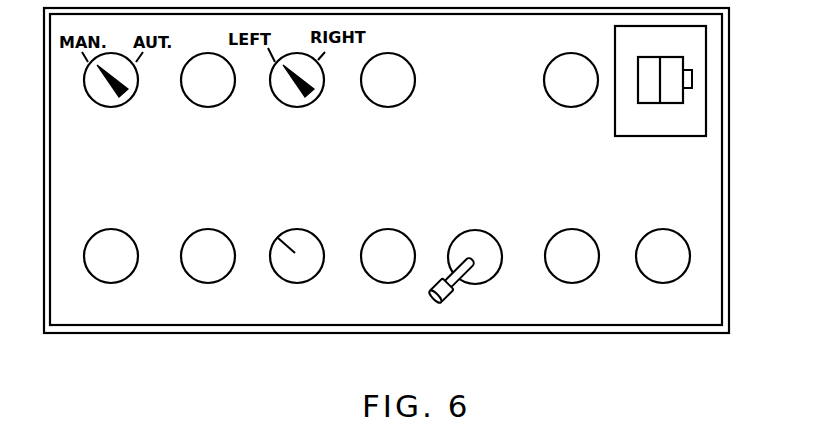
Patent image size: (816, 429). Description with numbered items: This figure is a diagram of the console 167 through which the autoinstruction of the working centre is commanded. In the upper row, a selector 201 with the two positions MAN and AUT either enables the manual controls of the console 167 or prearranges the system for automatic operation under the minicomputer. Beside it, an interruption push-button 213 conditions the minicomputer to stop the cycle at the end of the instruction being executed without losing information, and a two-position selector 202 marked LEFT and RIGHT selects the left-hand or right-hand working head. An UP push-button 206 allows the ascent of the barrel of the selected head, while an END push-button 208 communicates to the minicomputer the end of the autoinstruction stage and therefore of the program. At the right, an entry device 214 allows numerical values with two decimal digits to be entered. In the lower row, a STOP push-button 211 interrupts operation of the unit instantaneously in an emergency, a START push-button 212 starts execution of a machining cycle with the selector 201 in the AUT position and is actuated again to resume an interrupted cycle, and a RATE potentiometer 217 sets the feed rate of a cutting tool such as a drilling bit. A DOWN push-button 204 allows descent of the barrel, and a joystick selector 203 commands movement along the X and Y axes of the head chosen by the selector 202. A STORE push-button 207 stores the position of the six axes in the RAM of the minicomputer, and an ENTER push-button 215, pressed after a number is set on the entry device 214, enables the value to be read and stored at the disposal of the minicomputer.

The console 167 is at (628, 333).
The selector 201 is at (107, 107).
The interruption push-button 213 is at (228, 118).
The two-position selector 202 is at (294, 107).
The push-button 206 is at (412, 46).
The push-button 208 is at (589, 55).
The entry device 214 is at (630, 137).
The push-button 211 is at (122, 218).
The start push-button 212 is at (210, 228).
The potentiometer 217 is at (297, 228).
The push-button 204 is at (392, 228).
The joystick selector 203 is at (493, 234).
The push-button 207 is at (575, 219).
The push-button 215 is at (667, 228).